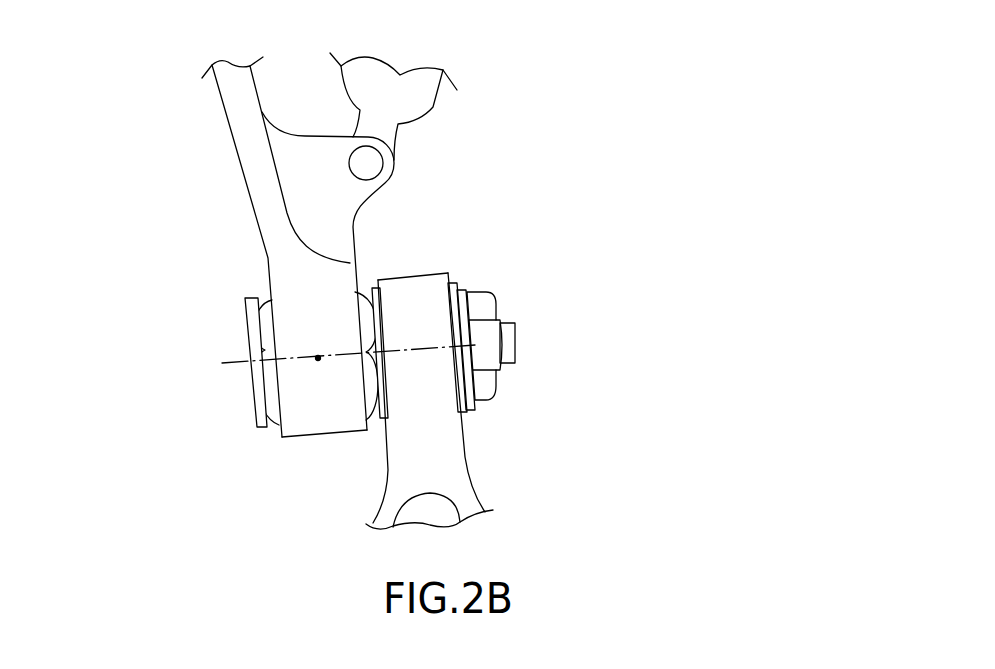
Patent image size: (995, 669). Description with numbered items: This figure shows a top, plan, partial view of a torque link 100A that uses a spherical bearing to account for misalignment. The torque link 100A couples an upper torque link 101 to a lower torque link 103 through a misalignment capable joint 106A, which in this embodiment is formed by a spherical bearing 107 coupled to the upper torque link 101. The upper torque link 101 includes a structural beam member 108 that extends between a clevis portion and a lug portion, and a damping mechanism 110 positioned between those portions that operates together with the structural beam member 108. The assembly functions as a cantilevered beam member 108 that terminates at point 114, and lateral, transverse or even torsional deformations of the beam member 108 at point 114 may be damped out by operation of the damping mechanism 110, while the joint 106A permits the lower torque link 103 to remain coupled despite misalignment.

The torque link 100A is at (592, 142).
The upper torque link 101 is at (160, 95).
The lower torque link 103 is at (505, 438).
The misalignment capable joint 106A is at (530, 263).
The spherical bearing 107 is at (258, 296).
The structural beam member 108 is at (230, 123).
The damping mechanism 110 is at (437, 108).
The point 114 is at (318, 360).